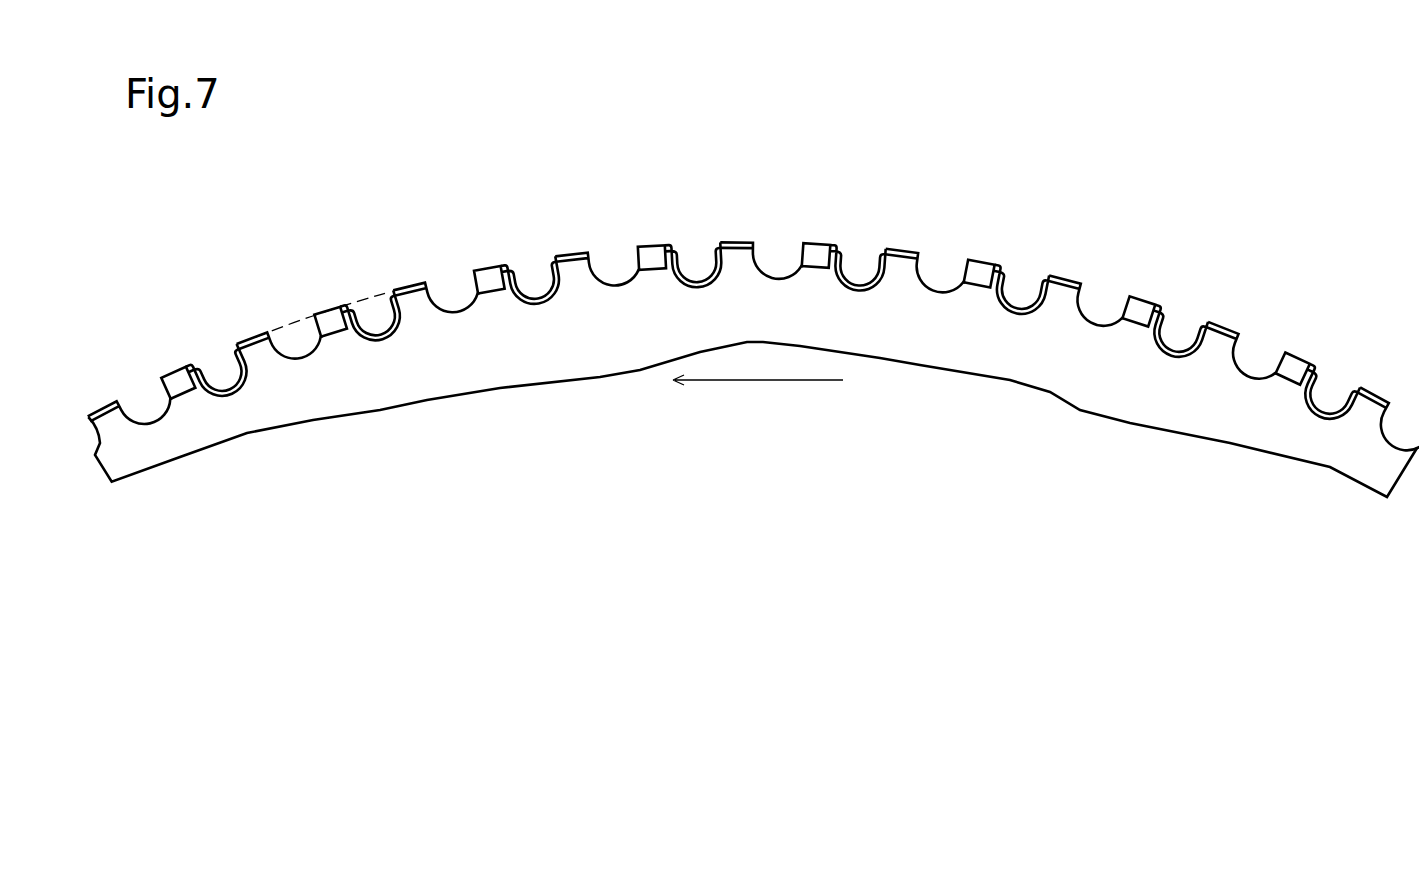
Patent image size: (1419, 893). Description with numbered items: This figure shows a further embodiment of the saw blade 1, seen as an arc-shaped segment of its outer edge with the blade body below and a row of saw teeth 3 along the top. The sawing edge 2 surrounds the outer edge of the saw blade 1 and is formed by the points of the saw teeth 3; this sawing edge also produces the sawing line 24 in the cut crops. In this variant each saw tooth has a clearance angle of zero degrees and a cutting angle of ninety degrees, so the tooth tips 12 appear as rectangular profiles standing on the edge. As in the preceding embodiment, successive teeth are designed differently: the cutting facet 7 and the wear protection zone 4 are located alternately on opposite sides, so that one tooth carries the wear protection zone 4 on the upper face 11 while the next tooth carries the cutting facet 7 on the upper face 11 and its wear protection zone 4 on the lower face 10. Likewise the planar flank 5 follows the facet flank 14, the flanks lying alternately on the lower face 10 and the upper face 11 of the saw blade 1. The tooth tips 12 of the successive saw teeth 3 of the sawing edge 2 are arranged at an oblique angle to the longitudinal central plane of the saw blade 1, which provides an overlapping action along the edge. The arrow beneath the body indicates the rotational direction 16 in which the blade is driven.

The saw blade 1 is at (1077, 353).
The sawing edge 2 is at (1029, 250).
The saw teeth 3 is at (497, 300).
The wear protection zone 4 is at (337, 317).
The planar flank 5 is at (666, 280).
The cutting facet 7 is at (547, 300).
The lower face 10 is at (978, 297).
The upper face 11 is at (876, 259).
The tooth tips 12 is at (1363, 385).
The facet flank 14 is at (750, 277).
The rotational direction 16 is at (745, 380).
The sawing line 24 is at (148, 384).